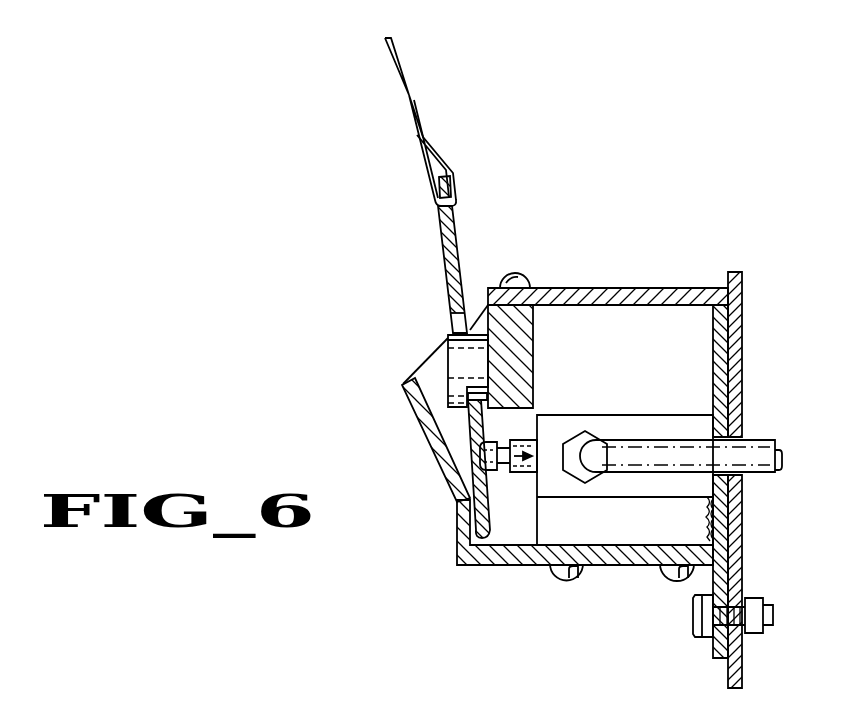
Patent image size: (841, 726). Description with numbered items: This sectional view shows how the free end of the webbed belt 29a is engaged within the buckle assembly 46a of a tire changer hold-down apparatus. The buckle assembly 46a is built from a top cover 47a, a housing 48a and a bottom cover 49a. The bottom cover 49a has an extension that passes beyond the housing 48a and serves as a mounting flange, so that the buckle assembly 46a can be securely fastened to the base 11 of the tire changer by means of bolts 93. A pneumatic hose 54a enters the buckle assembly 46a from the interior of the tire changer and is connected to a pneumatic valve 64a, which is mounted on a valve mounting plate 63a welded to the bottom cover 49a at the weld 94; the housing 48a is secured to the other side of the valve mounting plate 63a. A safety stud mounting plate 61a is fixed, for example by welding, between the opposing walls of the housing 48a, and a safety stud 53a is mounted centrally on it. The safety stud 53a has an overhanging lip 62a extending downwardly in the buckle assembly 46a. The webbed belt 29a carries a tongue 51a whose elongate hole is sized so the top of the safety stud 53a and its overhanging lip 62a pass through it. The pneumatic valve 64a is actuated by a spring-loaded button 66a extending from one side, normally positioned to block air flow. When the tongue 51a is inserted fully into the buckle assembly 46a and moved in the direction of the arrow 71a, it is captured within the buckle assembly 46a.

The base 11 is at (742, 287).
The webbed belt 29a is at (405, 103).
The buckle assembly 46a is at (383, 369).
The top cover 47a is at (433, 433).
The housing 48a is at (508, 563).
The bottom cover 49a is at (690, 287).
The tongue 51a is at (462, 253).
The safety stud 53a is at (448, 338).
The pneumatic hose 54a is at (655, 440).
The safety stud mounting plate 61a is at (525, 330).
The overhanging lip 62a is at (458, 403).
The valve mounting plate 63a is at (628, 532).
The pneumatic valve 64a is at (569, 422).
The button 66a is at (483, 468).
The arrow 71a is at (444, 264).
The bolts 93 is at (700, 622).
The weld 94 is at (709, 517).